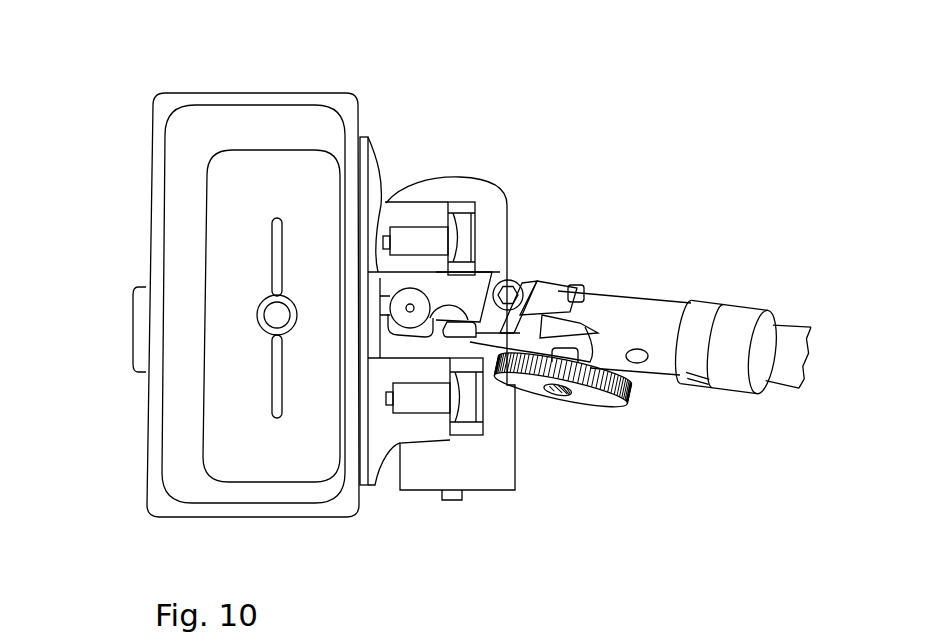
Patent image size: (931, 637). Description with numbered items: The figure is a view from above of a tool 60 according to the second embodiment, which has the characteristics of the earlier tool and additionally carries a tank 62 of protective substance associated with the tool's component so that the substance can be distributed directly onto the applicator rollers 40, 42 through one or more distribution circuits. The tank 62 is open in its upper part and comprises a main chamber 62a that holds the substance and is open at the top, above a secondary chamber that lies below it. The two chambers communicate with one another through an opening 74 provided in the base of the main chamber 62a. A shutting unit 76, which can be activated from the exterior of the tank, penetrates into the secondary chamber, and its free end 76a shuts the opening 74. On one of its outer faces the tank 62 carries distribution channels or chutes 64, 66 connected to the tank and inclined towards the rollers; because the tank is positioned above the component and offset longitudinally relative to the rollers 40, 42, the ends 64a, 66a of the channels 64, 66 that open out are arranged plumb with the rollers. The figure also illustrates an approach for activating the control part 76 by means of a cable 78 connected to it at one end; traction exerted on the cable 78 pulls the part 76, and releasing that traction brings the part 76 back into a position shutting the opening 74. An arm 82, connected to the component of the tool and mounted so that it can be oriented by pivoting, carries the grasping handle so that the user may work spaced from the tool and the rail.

The tool 60 is at (123, 371).
The tank 62 is at (236, 242).
The main chamber 62a is at (228, 130).
The opening 74 is at (281, 296).
The free end 76a is at (278, 314).
The cable 78 is at (477, 256).
The shutting unit 76 is at (387, 288).
The applicator roller 42 is at (436, 187).
The distribution channel 64 is at (413, 241).
The distribution channel 66 is at (413, 393).
The end of channel 66a is at (477, 256).
The end of channel 64a is at (468, 401).
The applicator roller 40 is at (507, 465).
The arm 82 is at (680, 293).